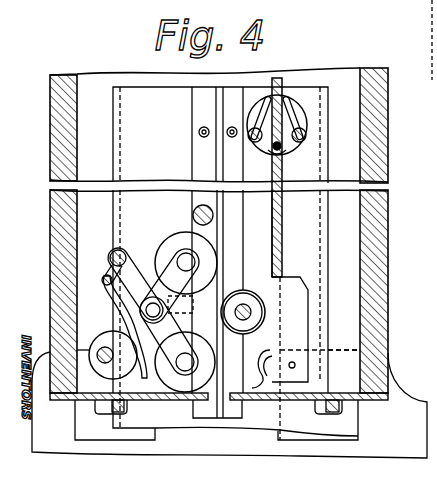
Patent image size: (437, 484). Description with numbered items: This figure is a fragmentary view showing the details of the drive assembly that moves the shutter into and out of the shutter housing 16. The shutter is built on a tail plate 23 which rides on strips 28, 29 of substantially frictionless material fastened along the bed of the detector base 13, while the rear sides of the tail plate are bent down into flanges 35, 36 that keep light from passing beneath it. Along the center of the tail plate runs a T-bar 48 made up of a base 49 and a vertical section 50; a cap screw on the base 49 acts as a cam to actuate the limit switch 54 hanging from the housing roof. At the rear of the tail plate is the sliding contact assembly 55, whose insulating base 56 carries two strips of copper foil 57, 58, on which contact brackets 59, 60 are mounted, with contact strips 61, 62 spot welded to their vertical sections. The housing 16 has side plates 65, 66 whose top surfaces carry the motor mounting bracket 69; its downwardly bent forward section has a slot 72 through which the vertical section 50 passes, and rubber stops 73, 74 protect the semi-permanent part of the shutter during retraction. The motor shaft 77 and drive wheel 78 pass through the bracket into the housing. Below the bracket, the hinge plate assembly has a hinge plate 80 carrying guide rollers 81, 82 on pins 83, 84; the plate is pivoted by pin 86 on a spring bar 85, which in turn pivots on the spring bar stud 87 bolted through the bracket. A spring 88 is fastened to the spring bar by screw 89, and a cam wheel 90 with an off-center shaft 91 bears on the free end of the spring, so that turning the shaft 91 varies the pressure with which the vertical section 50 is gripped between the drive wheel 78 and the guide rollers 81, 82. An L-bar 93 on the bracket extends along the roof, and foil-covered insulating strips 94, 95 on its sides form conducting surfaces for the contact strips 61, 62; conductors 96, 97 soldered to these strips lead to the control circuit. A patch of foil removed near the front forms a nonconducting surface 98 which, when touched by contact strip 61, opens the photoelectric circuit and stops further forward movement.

The detector base 13 is at (229, 405).
The shutter housing 16 is at (394, 230).
The tail plate 23 is at (156, 309).
The strip of frictionless material 28 is at (344, 365).
The strip of frictionless material 29 is at (115, 420).
The flange 35 is at (328, 213).
The flange 36 is at (113, 213).
The T-bar 48 is at (190, 143).
The base 49 is at (200, 121).
The vertical section 50 is at (217, 152).
The limit switch 54 is at (195, 207).
The sliding contact assembly 55 is at (292, 155).
The base of insulating material 56 is at (265, 151).
The strip of copper foil 57 is at (252, 121).
The strip of copper foil 58 is at (302, 122).
The contact bracket 59 is at (297, 142).
The contact bracket 60 is at (248, 141).
The contact strip 61 is at (284, 110).
The contact strip 62 is at (258, 107).
The side plate 65 is at (389, 213).
The side plate 66 is at (50, 225).
The motor mounting bracket 69 is at (376, 400).
The slot 72 is at (210, 403).
The rubber stop 73 is at (333, 414).
The rubber stop 74 is at (126, 403).
The shaft 77 is at (240, 305).
The drive wheel 78 is at (248, 297).
The hinge plate 80 is at (169, 306).
The guide roller 81 is at (182, 237).
The guide roller 82 is at (219, 366).
The pin 83 is at (169, 286).
The pin 84 is at (194, 351).
The spring bar 85 is at (148, 257).
The pin 86 is at (141, 298).
The spring bar stud 87 is at (110, 258).
The spring 88 is at (118, 316).
The screw 89 is at (105, 284).
The cam wheel 90 is at (110, 379).
The off-center shaft 91 is at (114, 355).
The L-bar 93 is at (316, 358).
The strip of insulating material 94 is at (284, 197).
The strip of insulating material 95 is at (271, 198).
The electrical conductor 96 is at (262, 364).
The electrical conductor 97 is at (252, 388).
The nonconducting surface 98 is at (283, 224).